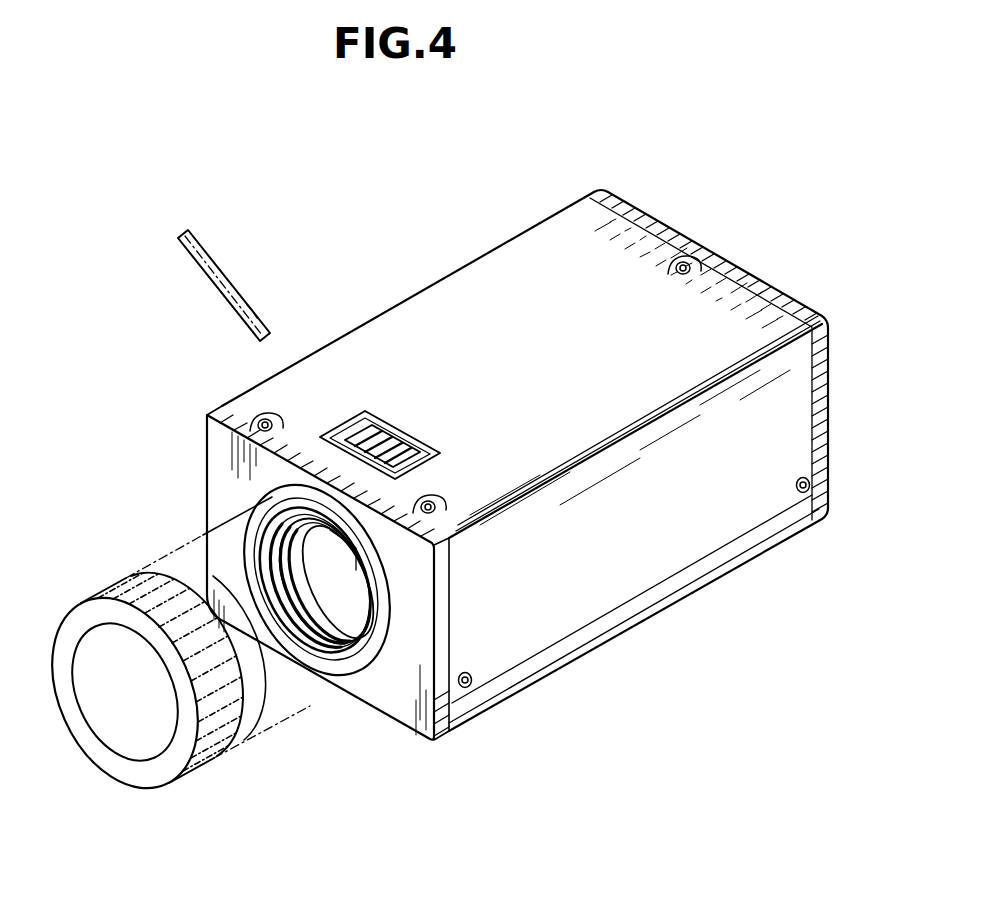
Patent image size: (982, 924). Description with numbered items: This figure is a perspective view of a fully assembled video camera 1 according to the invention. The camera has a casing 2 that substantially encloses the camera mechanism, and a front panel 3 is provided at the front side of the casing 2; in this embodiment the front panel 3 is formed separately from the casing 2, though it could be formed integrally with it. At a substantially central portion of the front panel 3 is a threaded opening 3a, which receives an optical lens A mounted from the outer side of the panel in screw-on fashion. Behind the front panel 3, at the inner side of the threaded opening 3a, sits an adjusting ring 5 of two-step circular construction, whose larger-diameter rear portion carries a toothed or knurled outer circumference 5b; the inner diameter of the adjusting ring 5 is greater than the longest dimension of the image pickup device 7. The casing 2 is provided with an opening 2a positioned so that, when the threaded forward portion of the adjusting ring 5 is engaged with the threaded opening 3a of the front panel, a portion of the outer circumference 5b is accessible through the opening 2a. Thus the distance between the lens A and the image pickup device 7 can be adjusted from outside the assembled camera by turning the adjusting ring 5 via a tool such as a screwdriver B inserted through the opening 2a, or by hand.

The video camera 1 is at (426, 529).
The casing 2 is at (525, 460).
The opening 2a is at (388, 344).
The front panel 3 is at (409, 619).
The threaded opening 3a is at (307, 653).
The adjusting ring 5 is at (330, 622).
The toothed or knurled outer circumference 5b is at (377, 437).
The image pickup device 7 is at (353, 570).
The optical lens A is at (222, 760).
The screwdriver B is at (235, 278).